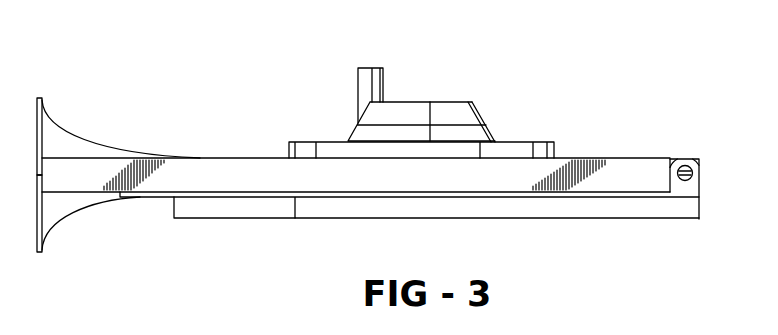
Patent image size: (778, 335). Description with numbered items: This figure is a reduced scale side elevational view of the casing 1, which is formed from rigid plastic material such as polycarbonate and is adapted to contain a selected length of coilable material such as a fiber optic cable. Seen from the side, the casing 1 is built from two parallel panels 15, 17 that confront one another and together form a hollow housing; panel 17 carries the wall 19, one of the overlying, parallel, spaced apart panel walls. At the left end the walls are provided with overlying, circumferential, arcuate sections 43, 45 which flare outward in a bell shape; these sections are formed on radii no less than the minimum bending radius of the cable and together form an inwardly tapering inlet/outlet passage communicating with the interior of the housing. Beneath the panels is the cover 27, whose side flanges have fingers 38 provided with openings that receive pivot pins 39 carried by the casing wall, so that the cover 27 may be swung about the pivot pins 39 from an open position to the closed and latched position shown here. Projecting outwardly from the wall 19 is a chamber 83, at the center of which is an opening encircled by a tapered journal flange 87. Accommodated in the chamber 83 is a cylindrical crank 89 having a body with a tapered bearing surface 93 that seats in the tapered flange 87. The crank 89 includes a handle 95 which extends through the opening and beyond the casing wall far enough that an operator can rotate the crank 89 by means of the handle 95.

The casing 1 is at (735, 142).
The panel 15 is at (592, 224).
The panel 17 is at (612, 142).
The wall 19 is at (213, 157).
The cover 27 is at (278, 224).
The fingers 38 is at (693, 188).
The pivot pins 39 is at (685, 165).
The arcuate section 43 is at (53, 222).
The arcuate section 45 is at (48, 124).
The chamber 83 is at (306, 141).
The tapered journal flange 87 is at (495, 139).
The crank 89 is at (498, 105).
The tapered bearing surface 93 is at (437, 113).
The handle 95 is at (361, 82).